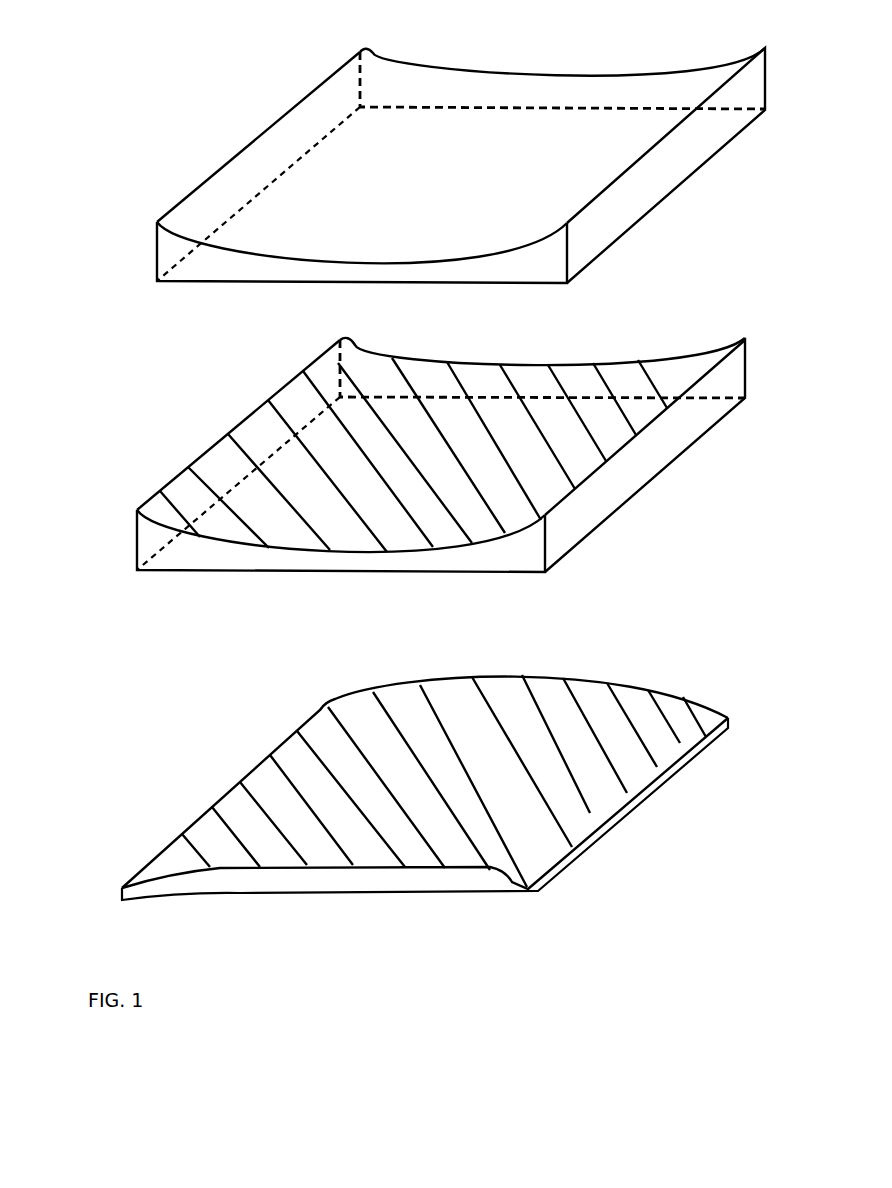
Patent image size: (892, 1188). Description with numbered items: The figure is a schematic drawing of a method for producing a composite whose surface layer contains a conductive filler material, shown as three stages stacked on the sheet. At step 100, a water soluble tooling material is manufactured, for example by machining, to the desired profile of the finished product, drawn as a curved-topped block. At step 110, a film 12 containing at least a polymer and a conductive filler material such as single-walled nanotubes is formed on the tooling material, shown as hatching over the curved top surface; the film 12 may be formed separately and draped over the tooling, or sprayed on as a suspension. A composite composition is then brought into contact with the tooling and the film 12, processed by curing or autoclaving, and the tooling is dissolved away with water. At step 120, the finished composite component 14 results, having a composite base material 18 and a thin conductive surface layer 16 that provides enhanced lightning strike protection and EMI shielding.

The film 12 is at (298, 408).
The composite component 14 is at (283, 905).
The conductive surface layer 16 is at (330, 742).
The composite base material 18 is at (367, 878).
The step of manufacturing the tooling material 100 is at (155, 166).
The step of forming the film 110 is at (140, 434).
The step of producing the finished composite component 120 is at (155, 771).